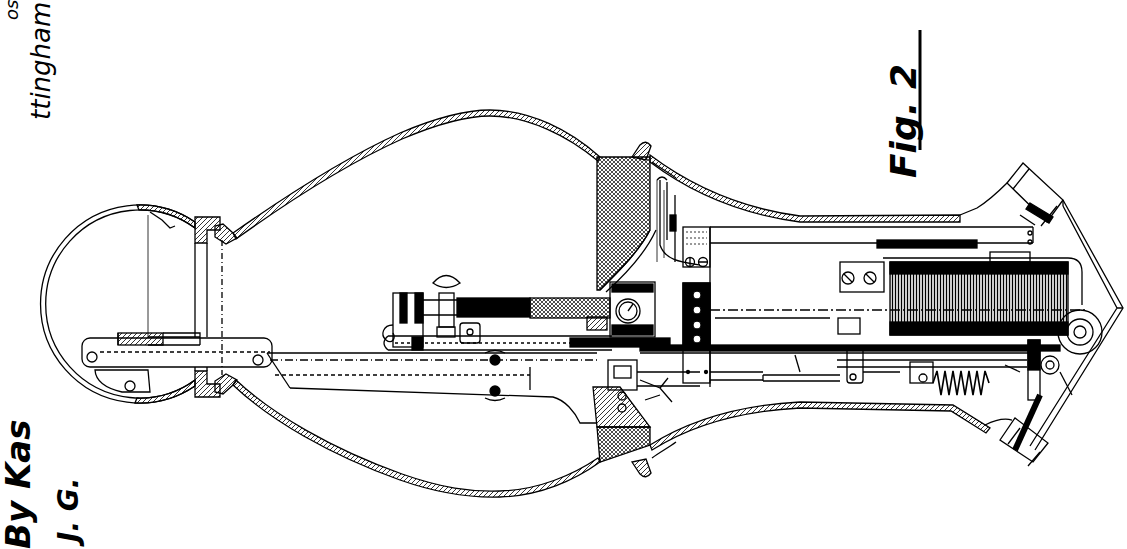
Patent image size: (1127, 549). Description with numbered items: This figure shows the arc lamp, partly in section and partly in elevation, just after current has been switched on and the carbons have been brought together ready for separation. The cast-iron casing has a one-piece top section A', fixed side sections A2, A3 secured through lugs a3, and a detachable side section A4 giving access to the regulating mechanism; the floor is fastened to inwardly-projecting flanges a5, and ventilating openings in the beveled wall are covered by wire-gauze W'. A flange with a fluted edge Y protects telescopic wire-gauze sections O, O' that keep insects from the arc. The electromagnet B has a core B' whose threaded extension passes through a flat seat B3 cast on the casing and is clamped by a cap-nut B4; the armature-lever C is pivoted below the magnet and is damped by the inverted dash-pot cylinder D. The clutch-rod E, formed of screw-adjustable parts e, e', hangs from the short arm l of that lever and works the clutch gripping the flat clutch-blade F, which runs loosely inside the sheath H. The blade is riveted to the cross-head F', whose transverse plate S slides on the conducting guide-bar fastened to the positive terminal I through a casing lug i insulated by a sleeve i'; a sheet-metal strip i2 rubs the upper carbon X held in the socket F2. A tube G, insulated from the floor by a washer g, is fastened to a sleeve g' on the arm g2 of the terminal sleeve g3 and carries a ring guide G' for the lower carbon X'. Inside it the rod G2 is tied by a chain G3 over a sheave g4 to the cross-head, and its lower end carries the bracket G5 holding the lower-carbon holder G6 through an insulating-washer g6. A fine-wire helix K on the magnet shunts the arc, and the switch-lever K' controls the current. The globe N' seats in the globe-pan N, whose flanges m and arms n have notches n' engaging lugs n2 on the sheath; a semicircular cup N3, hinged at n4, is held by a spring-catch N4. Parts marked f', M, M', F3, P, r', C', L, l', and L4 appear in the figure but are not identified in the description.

The globe N' is at (407, 303).
The semicircular cup N3 is at (118, 304).
The globe-pan N is at (185, 300).
The spring-catch N4 is at (162, 231).
The clutch-rod E is at (221, 377).
The elongated lugs n2 is at (128, 333).
The depending flanges m is at (174, 327).
The depending arms n is at (181, 329).
The notches n' is at (140, 328).
The hinge n4 is at (130, 395).
The metal rod G2 is at (433, 388).
The sheath H is at (497, 385).
The tube G is at (498, 338).
The upper carbon X is at (508, 299).
The lower carbon X' is at (556, 306).
The insulating-washer g6 is at (404, 311).
The insulating washer or sleeve g is at (380, 333).
The bracket G5 is at (420, 290).
The lower-carbon holder G6 is at (438, 293).
The sleeve g' is at (439, 332).
The forked or ring guide G' is at (471, 310).
The gauge f' is at (613, 309).
The telescopic wire-gauze section O is at (621, 321).
The telescopic wire-gauze section O' is at (628, 353).
The fluted edge Y is at (641, 306).
The inwardly-projecting flanges a5 is at (670, 312).
The fixed side section A2 is at (805, 188).
The fixed side section A3 is at (820, 426).
The top section A' is at (1041, 316).
The detachable side section A4 is at (897, 307).
The lugs a3 is at (772, 323).
The wire-gauze W' is at (1013, 194).
The lower nozzle M is at (1010, 442).
The nozzle base M' is at (998, 416).
The positive terminal I is at (871, 238).
The lug or flange i is at (844, 221).
The sheet-metal conducting strip i2 is at (677, 228).
The insulating-sleeve i' is at (1027, 220).
The block or socket F2 is at (649, 221).
The transverse plate or bar S is at (704, 247).
The cross-head F' is at (704, 333).
The inverted-dash-pot cylinder D is at (907, 225).
The clutch-rod part e is at (801, 384).
The clutch-rod part e' is at (736, 382).
The frame arm F3 is at (796, 363).
The clutch-blade F is at (654, 381).
The fork lever P is at (664, 398).
The roller r' is at (627, 402).
The electromagnet B is at (982, 265).
The core B' is at (1053, 289).
The cap-nut B4 is at (1010, 250).
The flat bearing or seat B3 is at (844, 325).
The armature-lever C is at (853, 279).
The screw C' is at (843, 272).
The short arm l is at (932, 369).
The bracket L is at (849, 365).
The link l' is at (882, 380).
The switch-lever K' is at (921, 378).
The fine-wire helix K is at (961, 402).
The armature bar L4 is at (1053, 370).
The chain G3 is at (1057, 367).
The terminal sleeve g3 is at (1027, 414).
The sheave g4 is at (1074, 383).
The arm g2 is at (1013, 367).